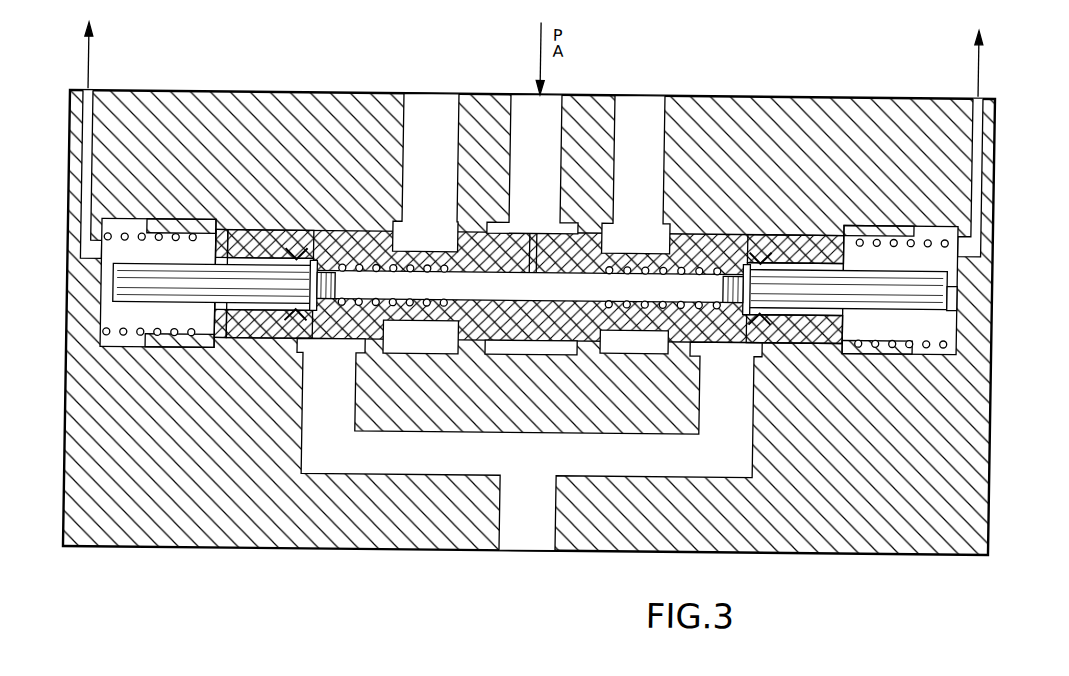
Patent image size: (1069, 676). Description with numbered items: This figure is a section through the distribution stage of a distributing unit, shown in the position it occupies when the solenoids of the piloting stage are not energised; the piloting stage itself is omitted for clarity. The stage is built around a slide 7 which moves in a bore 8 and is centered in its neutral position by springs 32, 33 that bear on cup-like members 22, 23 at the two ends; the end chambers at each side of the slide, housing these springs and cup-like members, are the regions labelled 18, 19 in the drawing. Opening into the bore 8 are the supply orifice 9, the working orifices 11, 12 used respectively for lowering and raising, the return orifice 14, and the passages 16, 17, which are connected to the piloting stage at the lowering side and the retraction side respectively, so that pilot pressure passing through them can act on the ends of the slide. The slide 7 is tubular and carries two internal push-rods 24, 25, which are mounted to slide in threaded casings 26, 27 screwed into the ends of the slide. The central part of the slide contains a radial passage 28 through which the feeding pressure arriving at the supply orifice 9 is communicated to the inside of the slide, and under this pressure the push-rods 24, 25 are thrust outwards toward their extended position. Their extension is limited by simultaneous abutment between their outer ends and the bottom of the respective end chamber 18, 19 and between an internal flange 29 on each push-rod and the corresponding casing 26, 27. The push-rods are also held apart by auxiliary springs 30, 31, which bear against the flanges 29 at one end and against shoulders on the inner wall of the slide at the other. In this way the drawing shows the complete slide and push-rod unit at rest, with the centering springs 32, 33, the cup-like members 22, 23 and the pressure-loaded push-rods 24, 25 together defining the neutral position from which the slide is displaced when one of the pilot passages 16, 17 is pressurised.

The slide 7 is at (287, 320).
The bore 8 is at (251, 326).
The supply orifice 9 is at (545, 117).
The working orifice 11 is at (415, 109).
The working orifice 12 is at (645, 112).
The return orifice 14 is at (513, 525).
The passage 16 is at (86, 142).
The passage 17 is at (976, 118).
The left return spring 18 is at (132, 246).
The right return spring 19 is at (928, 247).
The cup-like member 22 is at (164, 349).
The cup-like member 23 is at (886, 345).
The push-rod 24 is at (136, 289).
The push-rod 25 is at (929, 310).
The threaded casing 26 is at (264, 228).
The threaded casing 27 is at (797, 238).
The radial passage 28 is at (533, 249).
The internal flange 29 is at (312, 243).
The auxiliary spring 30 is at (361, 302).
The auxiliary spring 31 is at (693, 304).
The spring 32 is at (125, 216).
The spring 33 is at (967, 229).